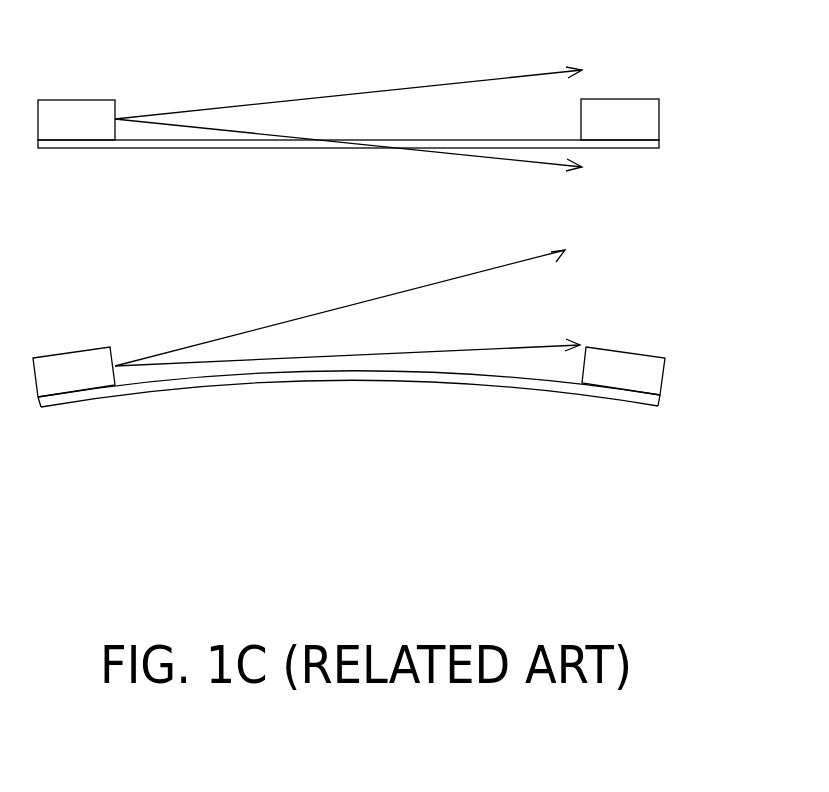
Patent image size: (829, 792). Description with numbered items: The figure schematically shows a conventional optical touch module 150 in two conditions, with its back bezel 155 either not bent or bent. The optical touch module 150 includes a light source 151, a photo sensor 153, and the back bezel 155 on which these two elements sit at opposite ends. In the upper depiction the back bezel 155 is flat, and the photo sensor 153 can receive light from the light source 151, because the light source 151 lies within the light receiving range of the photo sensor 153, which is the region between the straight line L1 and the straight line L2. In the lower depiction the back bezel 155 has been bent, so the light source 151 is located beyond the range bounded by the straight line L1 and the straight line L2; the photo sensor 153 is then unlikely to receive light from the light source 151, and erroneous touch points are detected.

The optical touch module 150 is at (385, 255).
The light source 151 is at (630, 115).
The photo sensor 153 is at (80, 118).
The back bezel 155 is at (387, 143).
The straight line L1 is at (445, 82).
The straight line L2 is at (478, 158).